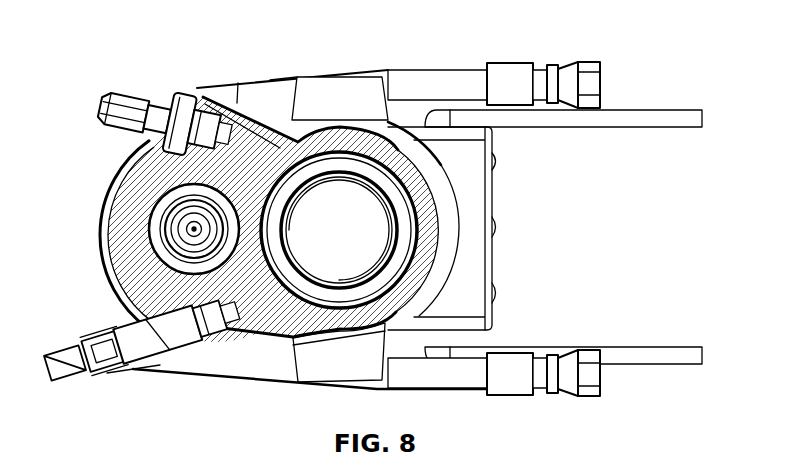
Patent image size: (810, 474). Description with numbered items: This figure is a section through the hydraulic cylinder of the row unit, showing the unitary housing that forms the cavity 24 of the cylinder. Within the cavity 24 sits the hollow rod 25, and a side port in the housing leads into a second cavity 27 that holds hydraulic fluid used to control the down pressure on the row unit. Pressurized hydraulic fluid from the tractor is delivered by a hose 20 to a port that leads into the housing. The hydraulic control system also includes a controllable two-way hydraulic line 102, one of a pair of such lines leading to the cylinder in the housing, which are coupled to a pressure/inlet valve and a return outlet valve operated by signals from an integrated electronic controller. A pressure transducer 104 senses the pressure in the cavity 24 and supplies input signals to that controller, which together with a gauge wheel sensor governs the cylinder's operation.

The hose 20 is at (452, 390).
The cavity 24 is at (418, 258).
The hollow rod 25 is at (418, 202).
The second cavity 27 is at (148, 222).
The hydraulic line 102 is at (426, 67).
The pressure transducer 104 is at (127, 324).